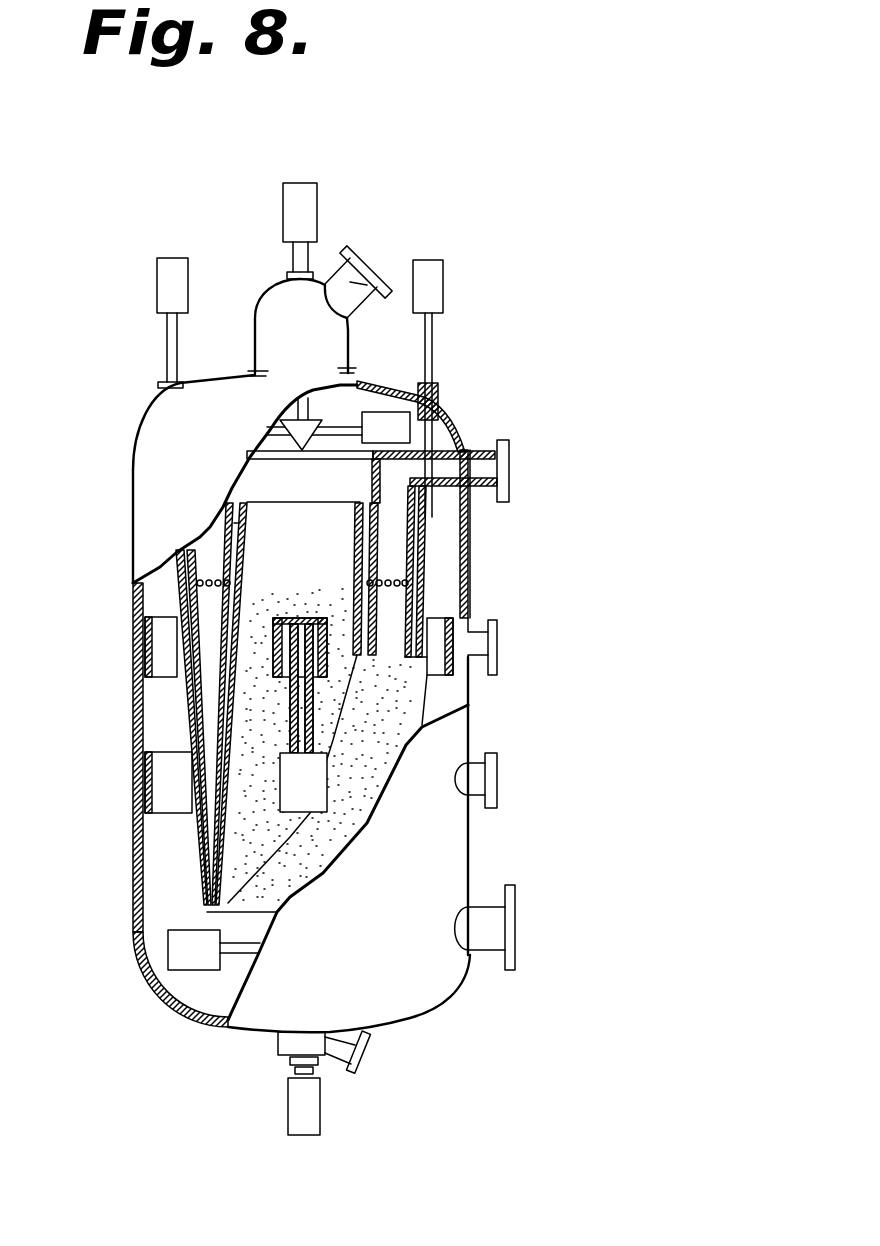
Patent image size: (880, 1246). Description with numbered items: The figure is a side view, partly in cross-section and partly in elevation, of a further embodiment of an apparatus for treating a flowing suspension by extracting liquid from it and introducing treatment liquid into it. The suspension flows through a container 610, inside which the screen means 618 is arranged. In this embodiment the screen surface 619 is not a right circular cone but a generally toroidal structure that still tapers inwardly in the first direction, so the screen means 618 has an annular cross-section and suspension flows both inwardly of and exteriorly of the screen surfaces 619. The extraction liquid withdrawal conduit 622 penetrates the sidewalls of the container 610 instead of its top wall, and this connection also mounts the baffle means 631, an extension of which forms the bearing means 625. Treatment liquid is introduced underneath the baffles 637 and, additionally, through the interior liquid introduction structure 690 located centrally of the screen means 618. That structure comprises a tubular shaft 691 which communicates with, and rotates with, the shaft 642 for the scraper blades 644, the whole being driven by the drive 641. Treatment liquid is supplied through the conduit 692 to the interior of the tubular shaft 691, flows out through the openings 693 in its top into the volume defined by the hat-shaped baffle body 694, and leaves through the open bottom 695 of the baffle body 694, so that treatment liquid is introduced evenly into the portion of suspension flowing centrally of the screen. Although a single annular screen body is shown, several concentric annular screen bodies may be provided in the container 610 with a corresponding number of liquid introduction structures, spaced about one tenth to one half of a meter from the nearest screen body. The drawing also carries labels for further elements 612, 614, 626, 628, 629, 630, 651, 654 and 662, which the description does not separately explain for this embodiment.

The container 610 is at (132, 603).
The inlet nozzle 612 is at (353, 283).
The outlet nozzle 614 is at (480, 915).
The screen means 618 is at (128, 862).
The screen surface 619 is at (250, 668).
The extraction liquid withdrawal conduit 622 is at (500, 443).
The bearing means 625 is at (373, 470).
The distribution chamber 626 is at (368, 498).
The top connection 628 is at (170, 272).
The probe rod 629 is at (437, 363).
The vessel head 630 is at (160, 386).
The baffle means 631 is at (390, 574).
The baffles 637 is at (438, 672).
The drive 641 is at (307, 1137).
The shaft 642 is at (292, 1077).
The scraper blades 644 is at (185, 948).
The top fitting 651 is at (298, 200).
The control box 654 is at (384, 423).
The cylinder wall 662 is at (420, 560).
The interior liquid introduction structure 690 is at (330, 556).
The tubular shaft 691 is at (335, 724).
The conduit 692 is at (364, 1052).
The openings 693 is at (265, 615).
The hat-shaped baffle body 694 is at (380, 627).
The open bottom 695 is at (275, 677).